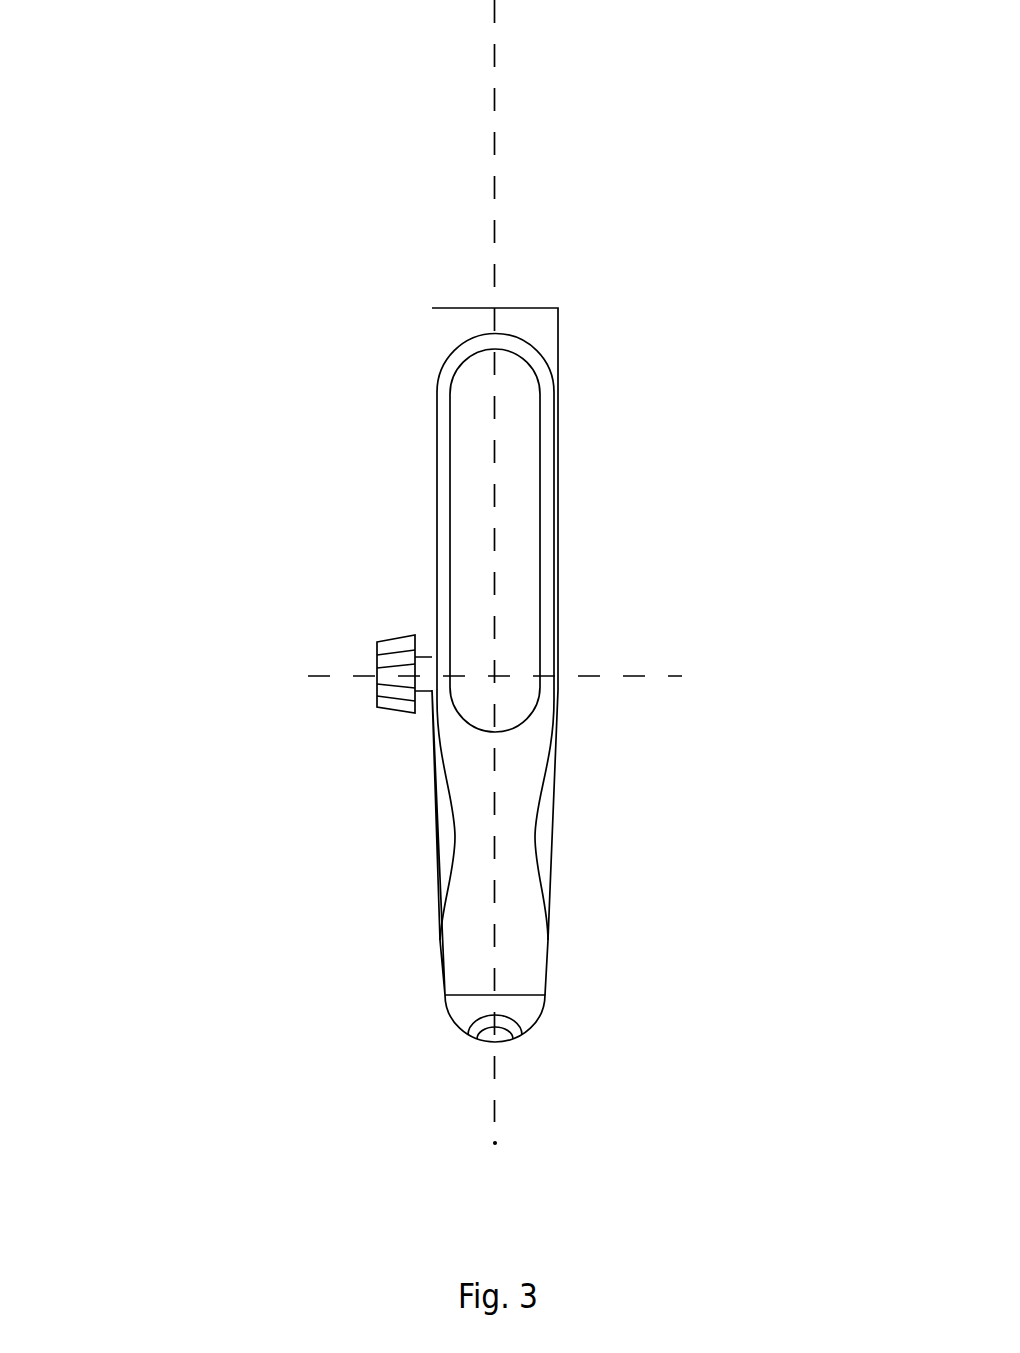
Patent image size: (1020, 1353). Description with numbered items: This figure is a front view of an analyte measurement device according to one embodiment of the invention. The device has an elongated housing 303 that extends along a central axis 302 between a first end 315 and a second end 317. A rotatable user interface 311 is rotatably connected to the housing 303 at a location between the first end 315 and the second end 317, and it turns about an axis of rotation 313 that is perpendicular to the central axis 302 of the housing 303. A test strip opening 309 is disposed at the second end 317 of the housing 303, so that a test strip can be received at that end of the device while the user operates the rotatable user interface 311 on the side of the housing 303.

The central axis 302 is at (497, 1145).
The housing 303 is at (518, 970).
The test strip opening 309 is at (486, 1040).
The rotatable user interface 311 is at (377, 725).
The axis of rotation 313 is at (298, 665).
The first end 315 is at (567, 325).
The second end 317 is at (530, 1017).